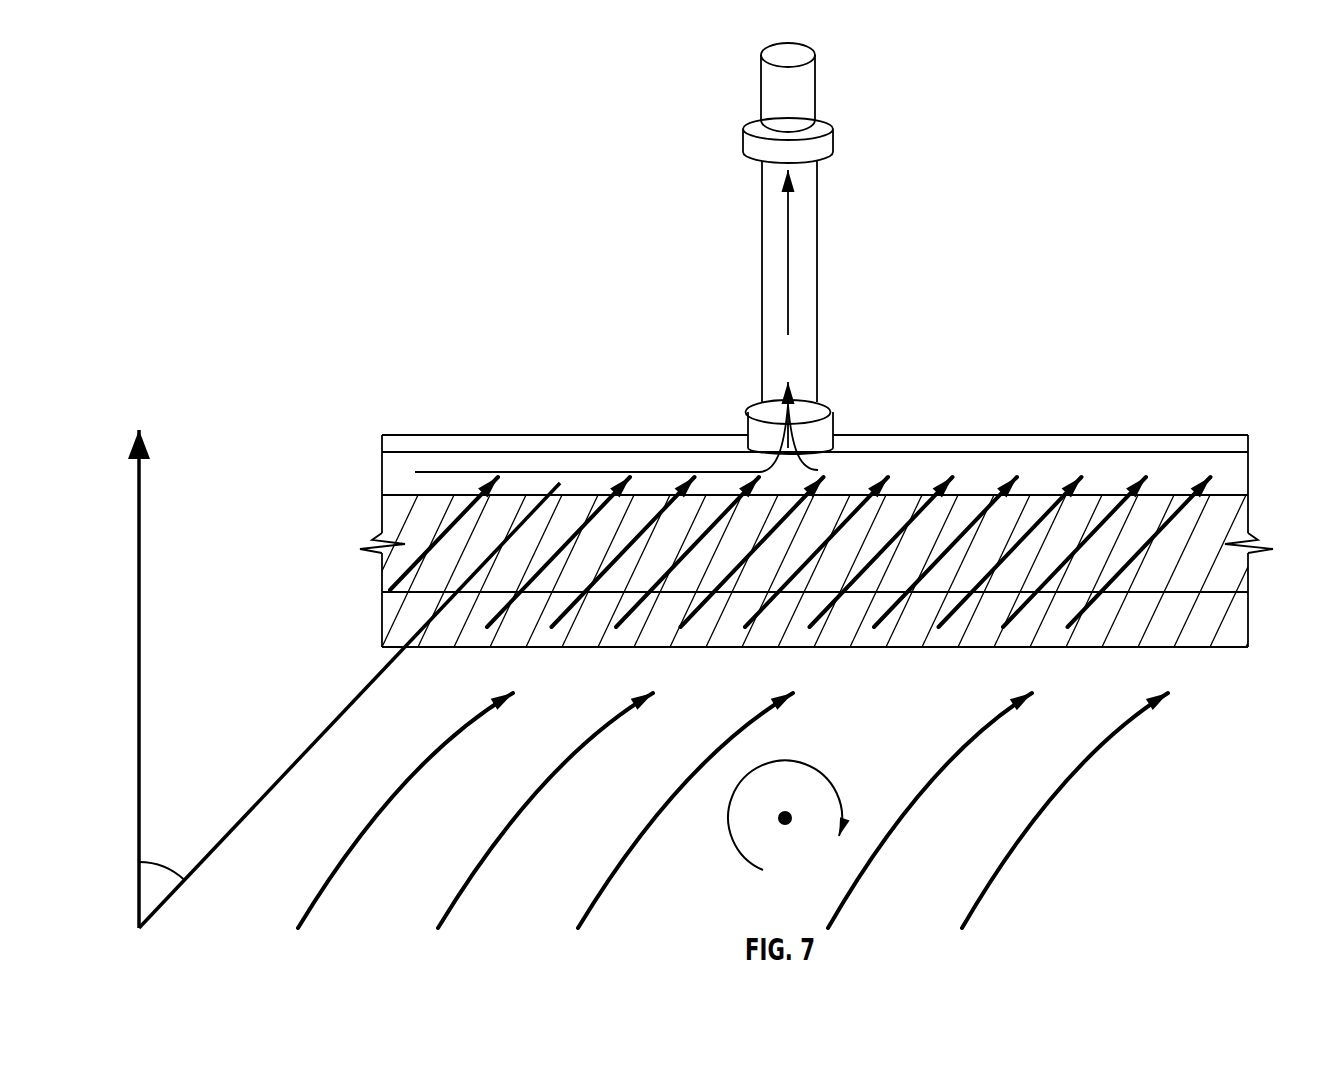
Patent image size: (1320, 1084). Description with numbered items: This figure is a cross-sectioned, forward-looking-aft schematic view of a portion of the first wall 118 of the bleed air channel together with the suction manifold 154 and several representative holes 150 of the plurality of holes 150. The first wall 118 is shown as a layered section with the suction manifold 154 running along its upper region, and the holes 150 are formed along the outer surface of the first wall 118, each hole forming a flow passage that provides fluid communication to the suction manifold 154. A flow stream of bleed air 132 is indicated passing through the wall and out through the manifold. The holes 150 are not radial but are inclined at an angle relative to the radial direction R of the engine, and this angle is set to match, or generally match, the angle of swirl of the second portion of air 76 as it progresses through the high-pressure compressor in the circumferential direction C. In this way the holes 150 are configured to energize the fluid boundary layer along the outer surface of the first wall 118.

The first wall 118 is at (1008, 225).
The flow stream of bleed air 132 is at (595, 522).
The suction manifold 154 is at (927, 433).
The holes 150 is at (1053, 488).
The second portion of air 76 is at (543, 783).
The radial direction R is at (140, 554).
The circumferential direction C is at (838, 790).